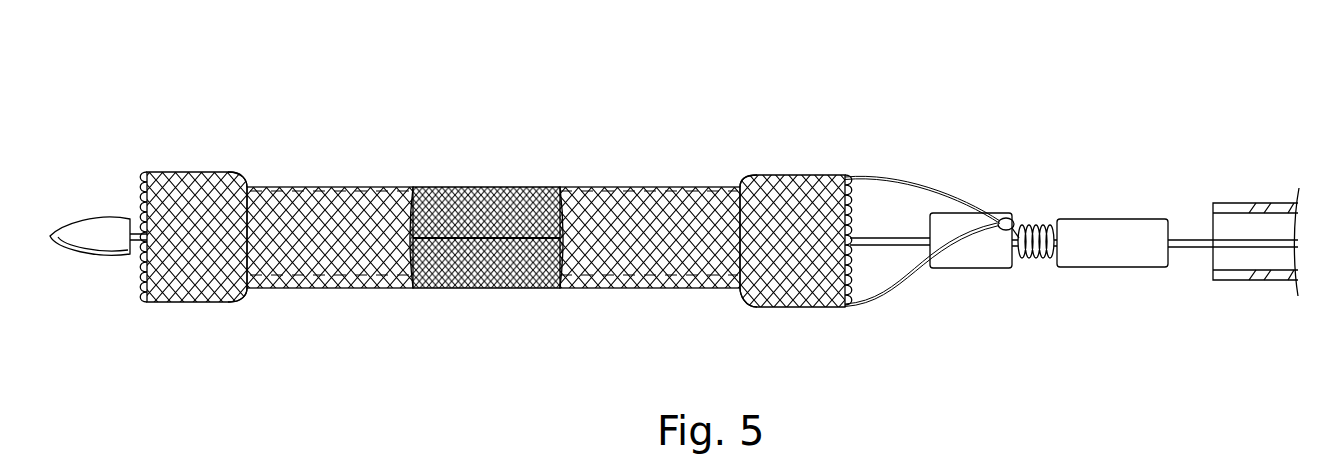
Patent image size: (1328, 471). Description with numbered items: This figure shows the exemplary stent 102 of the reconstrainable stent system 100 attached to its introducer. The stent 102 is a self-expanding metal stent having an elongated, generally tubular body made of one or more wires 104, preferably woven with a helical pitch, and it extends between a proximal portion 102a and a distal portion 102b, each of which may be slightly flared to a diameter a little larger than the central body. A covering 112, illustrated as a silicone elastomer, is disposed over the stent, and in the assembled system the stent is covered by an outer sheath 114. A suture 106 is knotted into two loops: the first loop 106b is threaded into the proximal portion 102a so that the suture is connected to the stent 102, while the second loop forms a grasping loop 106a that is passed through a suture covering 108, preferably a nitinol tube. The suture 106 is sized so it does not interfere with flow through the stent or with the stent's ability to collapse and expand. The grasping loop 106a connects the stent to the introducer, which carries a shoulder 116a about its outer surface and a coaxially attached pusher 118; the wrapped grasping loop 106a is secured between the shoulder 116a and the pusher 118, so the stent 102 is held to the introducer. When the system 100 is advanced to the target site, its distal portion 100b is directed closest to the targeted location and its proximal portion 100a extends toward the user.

The reconstrainable stent system 100 is at (663, 102).
The proximal portion 100a is at (1158, 157).
The distal portion 100b is at (203, 133).
The stent 102 is at (306, 289).
The proximal portion 102a is at (818, 307).
The distal portion 102b is at (158, 303).
The wires 104 is at (460, 282).
The suture 106 is at (953, 280).
The grasping loop 106a is at (1030, 262).
The first loop 106b is at (902, 283).
The suture covering 108 is at (1042, 220).
The covering 112 is at (390, 186).
The outer sheath 114 is at (1260, 205).
The shoulder 116a is at (1092, 268).
The pusher 118 is at (968, 217).